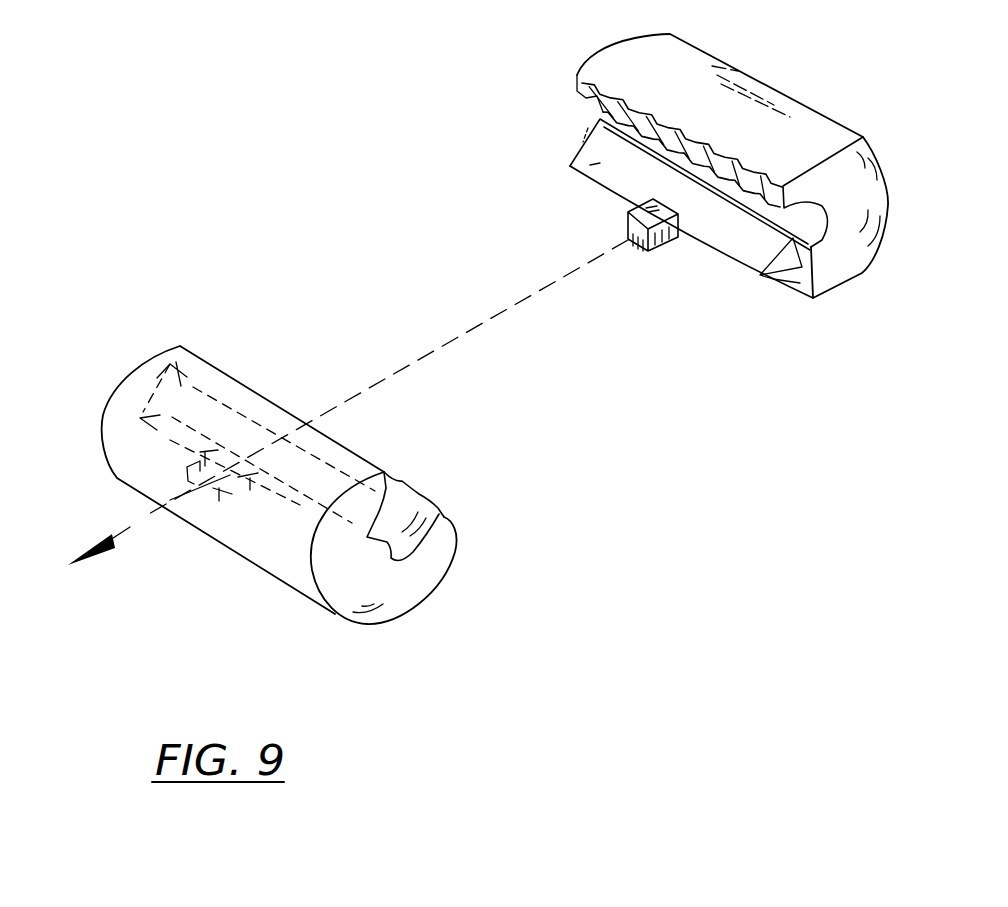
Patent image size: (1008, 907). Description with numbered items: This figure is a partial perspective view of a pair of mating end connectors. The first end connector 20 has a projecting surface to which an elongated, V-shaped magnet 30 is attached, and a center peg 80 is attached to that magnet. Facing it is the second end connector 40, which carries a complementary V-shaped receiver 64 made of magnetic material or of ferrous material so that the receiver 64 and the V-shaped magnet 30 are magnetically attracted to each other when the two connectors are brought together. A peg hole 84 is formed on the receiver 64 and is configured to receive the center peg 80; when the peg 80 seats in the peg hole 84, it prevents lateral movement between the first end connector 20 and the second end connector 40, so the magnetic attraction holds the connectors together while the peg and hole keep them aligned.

The first end connector 20 is at (572, 46).
The V-shaped magnet 30 is at (570, 171).
The center peg 80 is at (630, 222).
The second end connector 40 is at (442, 609).
The V-shaped receiver 64 is at (176, 387).
The peg hole 84 is at (185, 471).